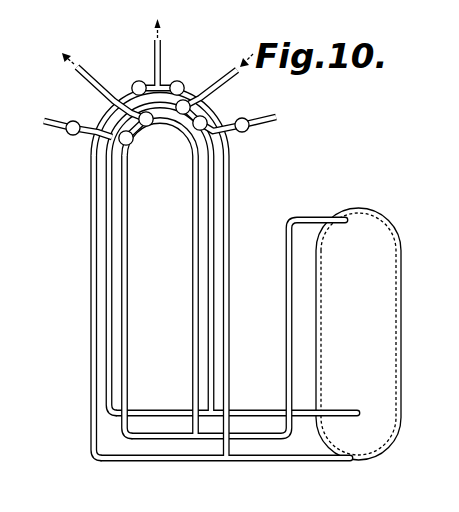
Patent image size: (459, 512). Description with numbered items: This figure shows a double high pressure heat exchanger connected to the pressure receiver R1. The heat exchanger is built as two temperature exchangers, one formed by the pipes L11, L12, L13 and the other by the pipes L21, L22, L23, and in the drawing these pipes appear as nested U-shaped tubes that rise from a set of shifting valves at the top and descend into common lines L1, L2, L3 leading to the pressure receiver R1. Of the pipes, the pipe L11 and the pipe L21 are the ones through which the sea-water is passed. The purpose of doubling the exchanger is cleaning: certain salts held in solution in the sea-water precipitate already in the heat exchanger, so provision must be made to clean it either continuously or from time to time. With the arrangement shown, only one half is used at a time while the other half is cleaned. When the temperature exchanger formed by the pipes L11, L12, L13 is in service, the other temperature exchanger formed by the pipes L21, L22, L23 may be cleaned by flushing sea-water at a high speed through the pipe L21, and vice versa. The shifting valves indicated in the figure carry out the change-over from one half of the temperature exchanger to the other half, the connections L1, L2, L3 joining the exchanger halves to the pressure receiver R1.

The pipe of the first temperature exchanger L11 is at (110, 226).
The pipe of the first temperature exchanger L12 is at (123, 182).
The pipe of the first temperature exchanger L13 is at (92, 276).
The pipe of the second temperature exchanger L21 is at (210, 188).
The pipe of the second temperature exchanger L22 is at (194, 217).
The pipe of the second temperature exchanger L23 is at (226, 265).
The connecting line to receiver L1 is at (256, 411).
The connecting line to receiver top L2 is at (256, 438).
The connecting line to receiver bottom L3 is at (293, 461).
The receiver vessel R1 is at (370, 222).